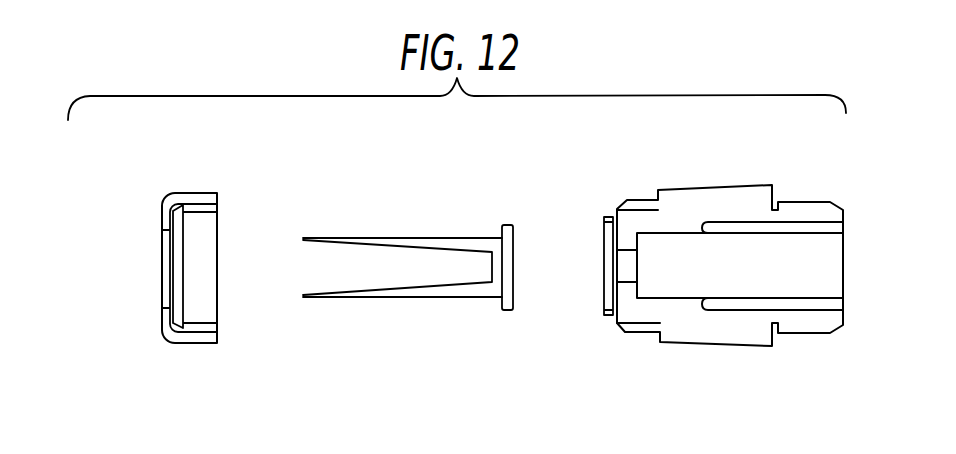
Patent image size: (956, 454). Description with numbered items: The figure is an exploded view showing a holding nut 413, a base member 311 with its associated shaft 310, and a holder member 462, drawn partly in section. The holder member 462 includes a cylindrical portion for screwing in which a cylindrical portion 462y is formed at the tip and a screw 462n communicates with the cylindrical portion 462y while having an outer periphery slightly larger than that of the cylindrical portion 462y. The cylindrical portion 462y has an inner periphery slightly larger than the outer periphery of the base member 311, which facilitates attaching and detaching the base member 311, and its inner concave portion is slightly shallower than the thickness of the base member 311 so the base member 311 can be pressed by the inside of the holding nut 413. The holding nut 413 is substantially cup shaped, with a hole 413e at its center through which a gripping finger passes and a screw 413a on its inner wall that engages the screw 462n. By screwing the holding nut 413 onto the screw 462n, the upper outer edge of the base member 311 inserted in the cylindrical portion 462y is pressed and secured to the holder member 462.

The holding nut 413 is at (200, 192).
The screw 413a is at (202, 320).
The hole 413e is at (160, 281).
The tapered shaft 310 is at (377, 238).
The base member 311 is at (508, 225).
The holder member 462 is at (755, 185).
The screw 462n is at (642, 200).
The cylindrical portion 462y is at (612, 317).